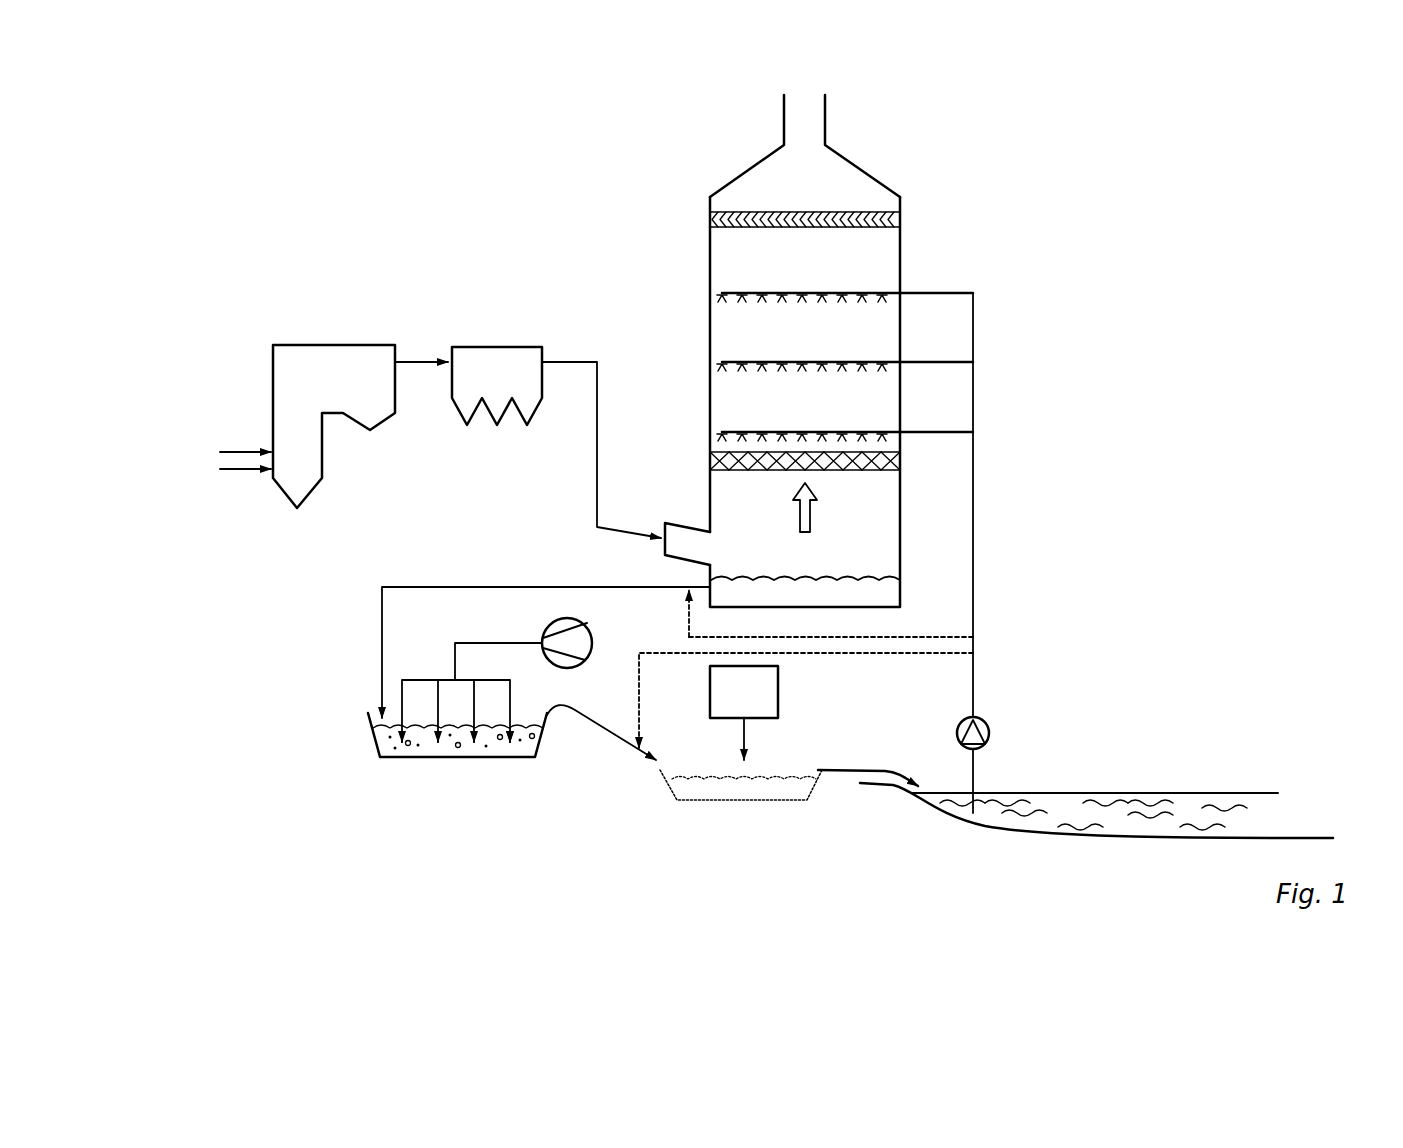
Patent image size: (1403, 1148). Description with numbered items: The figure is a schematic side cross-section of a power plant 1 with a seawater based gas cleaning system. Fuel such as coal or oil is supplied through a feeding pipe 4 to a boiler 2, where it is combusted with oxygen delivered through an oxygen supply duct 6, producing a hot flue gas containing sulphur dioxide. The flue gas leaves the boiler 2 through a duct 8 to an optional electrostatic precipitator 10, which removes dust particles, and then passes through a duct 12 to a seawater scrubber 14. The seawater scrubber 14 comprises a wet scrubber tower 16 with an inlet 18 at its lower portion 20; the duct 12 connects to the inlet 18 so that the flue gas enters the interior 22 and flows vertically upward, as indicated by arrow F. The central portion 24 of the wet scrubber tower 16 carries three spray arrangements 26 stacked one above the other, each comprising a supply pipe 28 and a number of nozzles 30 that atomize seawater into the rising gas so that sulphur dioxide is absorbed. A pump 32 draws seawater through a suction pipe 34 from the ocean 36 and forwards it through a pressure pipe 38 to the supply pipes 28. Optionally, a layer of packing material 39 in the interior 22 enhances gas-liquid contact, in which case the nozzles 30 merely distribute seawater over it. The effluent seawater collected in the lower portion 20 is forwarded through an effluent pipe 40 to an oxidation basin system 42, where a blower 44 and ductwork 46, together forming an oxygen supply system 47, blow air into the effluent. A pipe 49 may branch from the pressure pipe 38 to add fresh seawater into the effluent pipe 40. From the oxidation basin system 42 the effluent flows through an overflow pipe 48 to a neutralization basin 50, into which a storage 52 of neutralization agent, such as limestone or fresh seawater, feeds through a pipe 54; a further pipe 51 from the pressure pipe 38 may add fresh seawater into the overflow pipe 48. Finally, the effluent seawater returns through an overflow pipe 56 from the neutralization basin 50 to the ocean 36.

The power plant 1 is at (1030, 170).
The boiler 2 is at (318, 352).
The feeding pipe 4 is at (228, 452).
The oxygen supply duct 6 is at (230, 470).
The duct 8 is at (420, 361).
The electrostatic precipitator 10 is at (498, 346).
The duct 12 is at (580, 361).
The seawater scrubber 14 is at (878, 175).
The wet scrubber tower 16 is at (903, 512).
The inlet 18 is at (690, 527).
The lower portion 20 is at (898, 565).
The interior 22 is at (735, 402).
The central portion 24 is at (710, 341).
The spray arrangement 26 is at (866, 285).
The supply pipe 28 is at (955, 293).
The nozzle 30 is at (722, 292).
The pump 32 is at (990, 733).
The suction pipe 34 is at (975, 775).
The ocean 36 is at (1170, 793).
The pressure pipe 38 is at (975, 555).
The packing material 39 is at (712, 462).
The effluent pipe 40 is at (545, 586).
The oxidation basin system 42 is at (452, 770).
The blower 44 is at (593, 630).
The ductwork 46 is at (428, 679).
The oxygen supply system 47 is at (490, 640).
The overflow pipe 48 is at (575, 730).
The pipe 49 is at (960, 637).
The neutralization basin 50 is at (750, 800).
The pipe 51 is at (935, 665).
The storage of neutralization agent 52 is at (778, 690).
The pipe 54 is at (745, 738).
The overflow pipe 56 is at (856, 771).
The flue gas flow arrow F is at (808, 507).